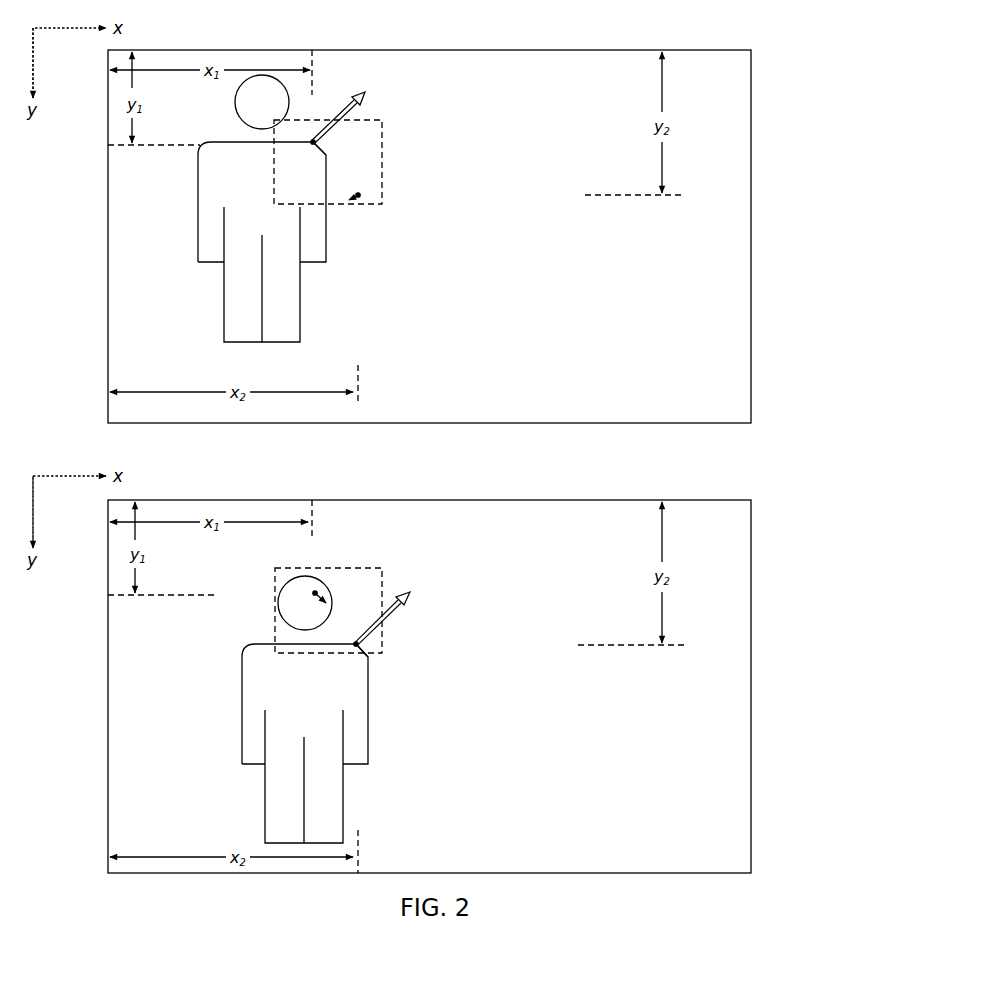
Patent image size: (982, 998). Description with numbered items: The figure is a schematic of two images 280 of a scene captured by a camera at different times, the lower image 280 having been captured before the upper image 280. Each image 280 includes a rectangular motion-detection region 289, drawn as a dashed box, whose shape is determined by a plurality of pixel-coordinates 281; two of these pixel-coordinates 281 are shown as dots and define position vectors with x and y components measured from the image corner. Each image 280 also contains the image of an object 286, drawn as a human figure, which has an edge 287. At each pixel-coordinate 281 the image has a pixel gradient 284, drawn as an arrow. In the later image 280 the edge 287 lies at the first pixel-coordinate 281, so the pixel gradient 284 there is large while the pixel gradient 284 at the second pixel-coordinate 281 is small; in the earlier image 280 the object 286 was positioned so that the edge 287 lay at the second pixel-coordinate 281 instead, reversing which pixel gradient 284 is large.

The image 280 is at (743, 413).
The pixel-coordinate 281 is at (316, 141).
The pixel gradient 284 is at (366, 98).
The object 286 is at (224, 286).
The edge 287 is at (337, 150).
The motion-detection region 289 is at (340, 206).